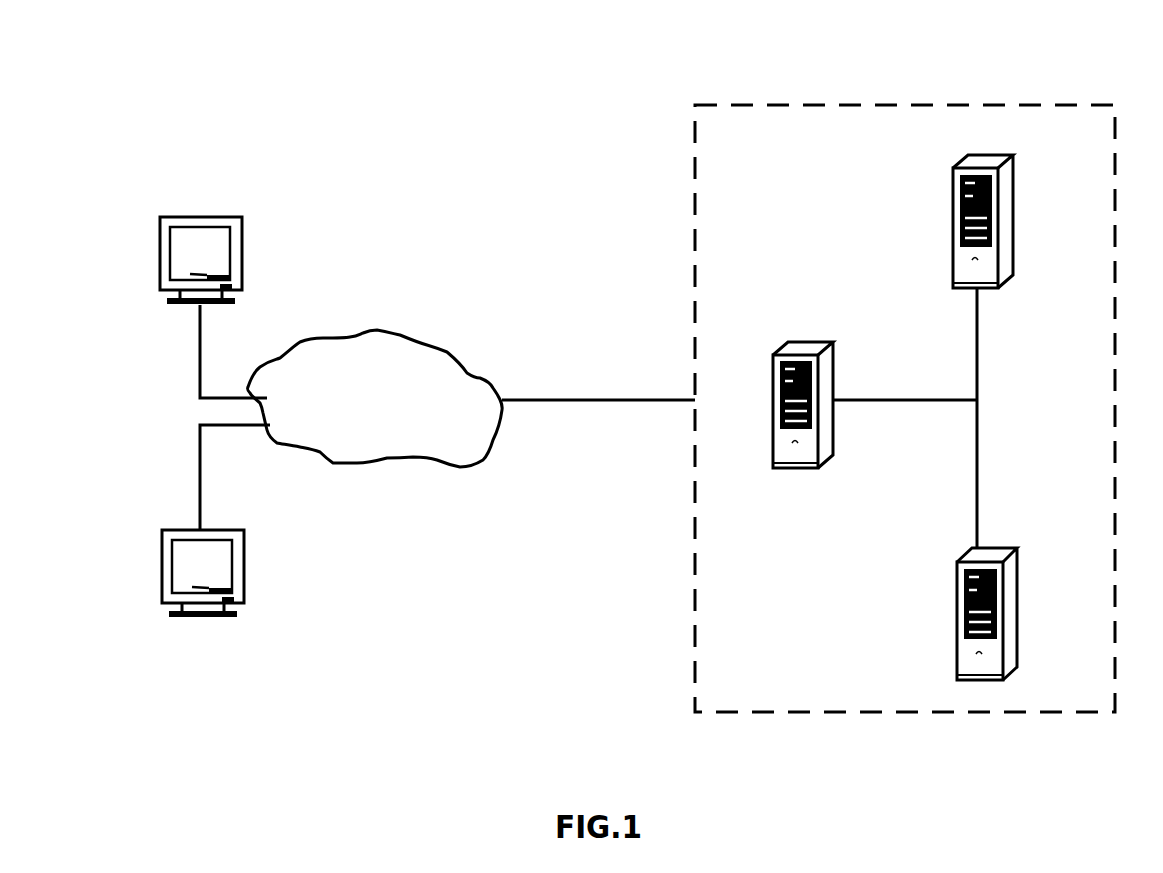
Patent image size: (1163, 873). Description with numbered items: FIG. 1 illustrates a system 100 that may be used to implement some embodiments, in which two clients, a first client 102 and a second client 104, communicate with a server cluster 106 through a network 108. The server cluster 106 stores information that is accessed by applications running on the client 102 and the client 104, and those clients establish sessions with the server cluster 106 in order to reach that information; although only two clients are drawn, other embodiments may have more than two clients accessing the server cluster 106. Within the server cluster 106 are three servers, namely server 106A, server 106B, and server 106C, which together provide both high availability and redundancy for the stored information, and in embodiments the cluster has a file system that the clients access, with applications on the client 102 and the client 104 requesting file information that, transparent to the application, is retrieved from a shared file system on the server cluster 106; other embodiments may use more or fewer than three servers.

The system 100 is at (366, 76).
The client 102 is at (160, 243).
The client 104 is at (163, 567).
The server cluster 106 is at (1072, 103).
The server 106A is at (953, 224).
The server 106B is at (800, 468).
The server 106C is at (957, 616).
The network 108 is at (377, 330).